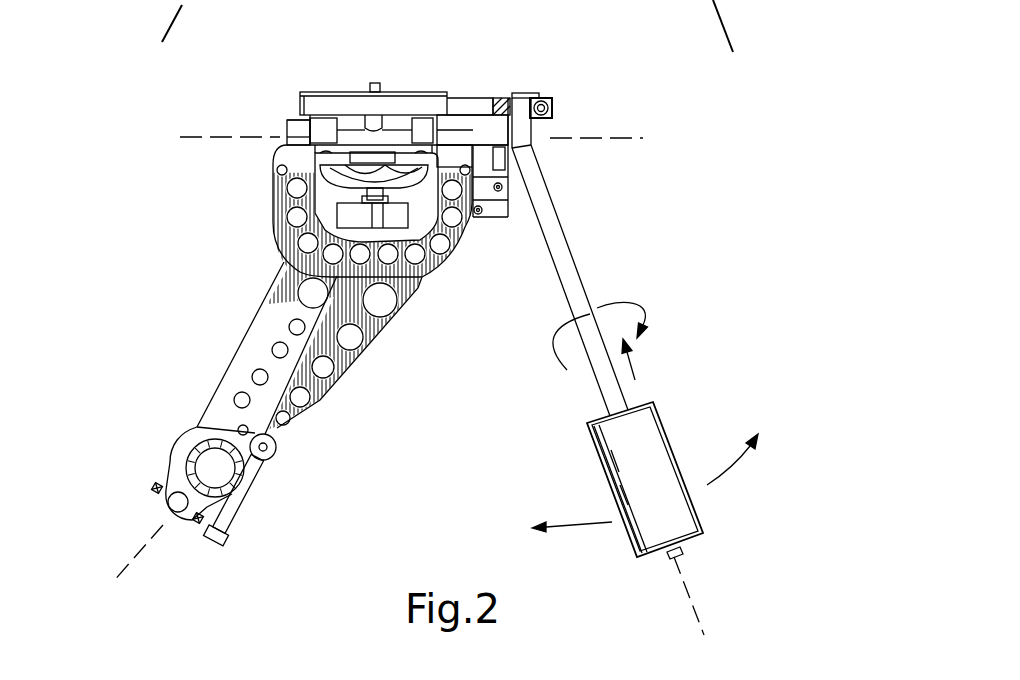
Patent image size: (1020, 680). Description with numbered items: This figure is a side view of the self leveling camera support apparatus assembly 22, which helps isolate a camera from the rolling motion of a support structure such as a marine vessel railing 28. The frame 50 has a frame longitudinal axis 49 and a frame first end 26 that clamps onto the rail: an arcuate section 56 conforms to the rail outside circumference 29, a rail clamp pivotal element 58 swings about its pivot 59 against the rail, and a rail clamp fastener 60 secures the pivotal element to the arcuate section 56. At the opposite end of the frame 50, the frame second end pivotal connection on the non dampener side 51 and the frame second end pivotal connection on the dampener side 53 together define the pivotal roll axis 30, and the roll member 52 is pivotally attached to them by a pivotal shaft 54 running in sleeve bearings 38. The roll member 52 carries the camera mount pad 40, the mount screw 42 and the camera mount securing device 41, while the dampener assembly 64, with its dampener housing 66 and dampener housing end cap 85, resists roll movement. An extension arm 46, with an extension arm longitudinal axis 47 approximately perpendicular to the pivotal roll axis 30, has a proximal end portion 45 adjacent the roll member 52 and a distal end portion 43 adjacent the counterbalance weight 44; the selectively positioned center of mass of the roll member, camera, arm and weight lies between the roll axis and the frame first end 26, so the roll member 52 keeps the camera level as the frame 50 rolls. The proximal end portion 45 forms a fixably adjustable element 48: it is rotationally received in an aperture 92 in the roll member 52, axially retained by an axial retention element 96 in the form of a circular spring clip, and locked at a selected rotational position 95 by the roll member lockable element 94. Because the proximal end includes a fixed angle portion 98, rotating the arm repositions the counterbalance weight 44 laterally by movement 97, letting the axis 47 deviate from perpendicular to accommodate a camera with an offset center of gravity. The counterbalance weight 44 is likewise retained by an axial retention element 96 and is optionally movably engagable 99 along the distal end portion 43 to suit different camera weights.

The self leveling camera support apparatus assembly 22 is at (155, 92).
The frame first end 26 is at (175, 467).
The marine vessel railing 28 is at (192, 475).
The rail outside circumference 29 is at (228, 500).
The pivotal roll axis 30 is at (192, 137).
The sleeve bearings 38 is at (285, 133).
The camera mount pad 40 is at (307, 90).
The camera mount securing device 41 is at (350, 215).
The mount screw 42 is at (378, 84).
The extension arm distal end portion 43 is at (597, 378).
The counterbalance weight 44 is at (593, 452).
The extension arm proximal end portion 45 is at (547, 180).
The extension arm 46 is at (592, 290).
The extension arm longitudinal axis 47 is at (688, 597).
The fixably adjustable element 48 is at (523, 150).
The frame longitudinal axis 49 is at (117, 580).
The frame 50 is at (260, 347).
The frame second end pivotal connection on the non dampener side 51 is at (287, 123).
The roll member 52 is at (491, 97).
The frame second end pivotal connection on the dampener side 53 is at (455, 130).
The pivotal shaft 54 is at (283, 137).
The arcuate section 56 is at (183, 438).
The rail clamp pivotal element 58 is at (253, 478).
The rail clamp pivot 59 is at (270, 446).
The rail clamp fastener 60 is at (222, 550).
The dampener assembly 64 is at (490, 218).
The dampener housing 66 is at (508, 207).
The dampener housing end cap 85 is at (493, 205).
The aperture 92 is at (530, 93).
The roll member lockable element 94 is at (552, 104).
The selected rotational position 95 is at (645, 305).
The axial retention element 96 is at (547, 103).
The counterbalance weight repositioning movement 97 is at (579, 525).
The fixed angle portion 98 is at (533, 142).
The movable engagement 99 is at (632, 366).